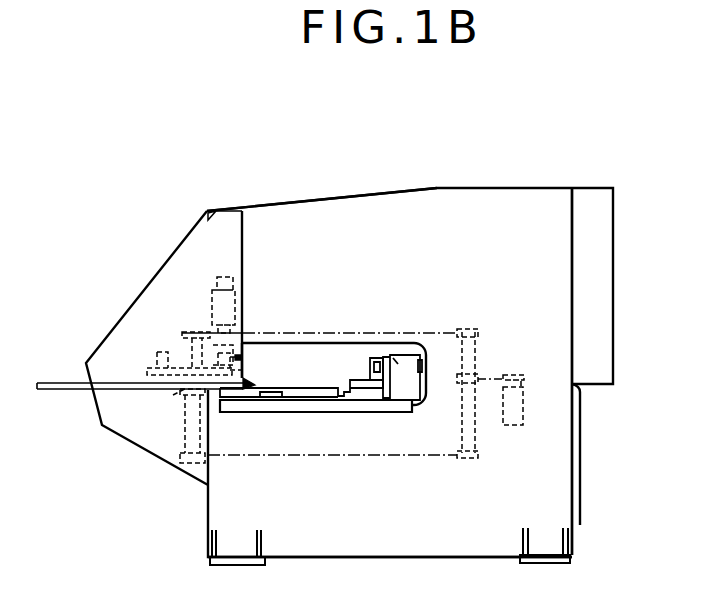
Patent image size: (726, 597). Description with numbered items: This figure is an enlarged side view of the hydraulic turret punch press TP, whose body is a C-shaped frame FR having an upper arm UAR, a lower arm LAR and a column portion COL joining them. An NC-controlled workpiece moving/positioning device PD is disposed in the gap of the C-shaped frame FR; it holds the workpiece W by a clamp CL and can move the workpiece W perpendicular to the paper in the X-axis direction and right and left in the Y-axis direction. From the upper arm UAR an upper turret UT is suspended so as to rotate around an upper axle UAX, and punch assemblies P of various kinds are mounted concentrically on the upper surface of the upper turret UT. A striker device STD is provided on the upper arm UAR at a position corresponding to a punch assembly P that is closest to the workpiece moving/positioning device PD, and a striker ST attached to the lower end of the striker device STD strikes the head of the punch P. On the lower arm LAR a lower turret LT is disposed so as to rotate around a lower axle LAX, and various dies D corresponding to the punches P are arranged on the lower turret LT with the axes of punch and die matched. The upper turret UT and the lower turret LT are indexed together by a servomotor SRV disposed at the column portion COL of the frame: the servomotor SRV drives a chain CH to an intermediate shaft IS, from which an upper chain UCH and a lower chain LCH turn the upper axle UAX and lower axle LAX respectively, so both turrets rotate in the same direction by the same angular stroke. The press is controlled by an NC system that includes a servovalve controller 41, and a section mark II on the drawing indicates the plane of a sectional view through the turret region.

The turret punch press TP is at (534, 173).
The C-shaped frame FR is at (565, 487).
The upper arm UAR is at (348, 228).
The lower arm LAR is at (342, 507).
The workpiece W is at (77, 385).
The upper axle UAX is at (157, 350).
The punch assembly P is at (158, 355).
The striker device STD is at (243, 308).
The striker ST is at (243, 338).
The servovalve controller 41 is at (240, 355).
The section line II is at (270, 342).
The upper turret UT is at (247, 376).
The die D is at (248, 378).
The clamp CL is at (366, 383).
The workpiece moving/positioning device PD is at (412, 352).
The upper chain UCH is at (341, 331).
The lower chain LCH is at (365, 456).
The intermediate shaft IS is at (475, 360).
The column portion COL is at (556, 318).
The chain CH is at (480, 378).
The servomotor SRV is at (523, 413).
The lower axle LAX is at (185, 418).
The lower turret LT is at (173, 395).